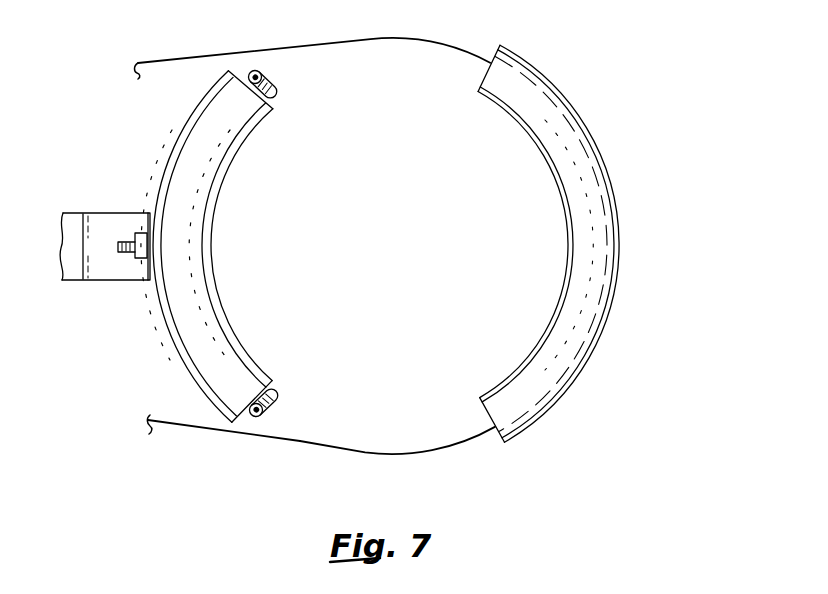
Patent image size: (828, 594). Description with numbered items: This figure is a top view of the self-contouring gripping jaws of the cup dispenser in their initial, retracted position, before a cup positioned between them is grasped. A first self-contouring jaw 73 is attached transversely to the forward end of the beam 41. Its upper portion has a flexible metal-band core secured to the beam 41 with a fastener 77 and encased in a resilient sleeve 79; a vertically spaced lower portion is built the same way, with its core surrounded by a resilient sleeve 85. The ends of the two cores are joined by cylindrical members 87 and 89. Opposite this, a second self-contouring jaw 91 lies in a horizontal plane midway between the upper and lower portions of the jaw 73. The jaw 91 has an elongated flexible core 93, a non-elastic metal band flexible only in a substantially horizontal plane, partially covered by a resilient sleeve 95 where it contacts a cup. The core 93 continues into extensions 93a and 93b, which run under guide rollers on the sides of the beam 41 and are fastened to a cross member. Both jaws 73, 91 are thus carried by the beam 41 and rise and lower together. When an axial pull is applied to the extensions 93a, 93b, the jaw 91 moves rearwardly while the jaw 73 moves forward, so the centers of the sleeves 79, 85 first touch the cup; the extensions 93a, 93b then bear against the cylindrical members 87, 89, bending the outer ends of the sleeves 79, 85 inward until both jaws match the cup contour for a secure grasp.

The beam 41 is at (88, 282).
The first self-contouring jaw 73 is at (189, 247).
The fastener 77 is at (128, 240).
The resilient sleeve 79 is at (170, 335).
The resilient sleeve 85 is at (247, 128).
The cylindrical member 87 is at (267, 393).
The cylindrical member 89 is at (280, 90).
The second self-contouring jaw 91 is at (596, 243).
The flexible core 93 is at (408, 452).
The extension 93a is at (265, 53).
The extension 93b is at (198, 430).
The resilient sleeve 95 is at (625, 255).